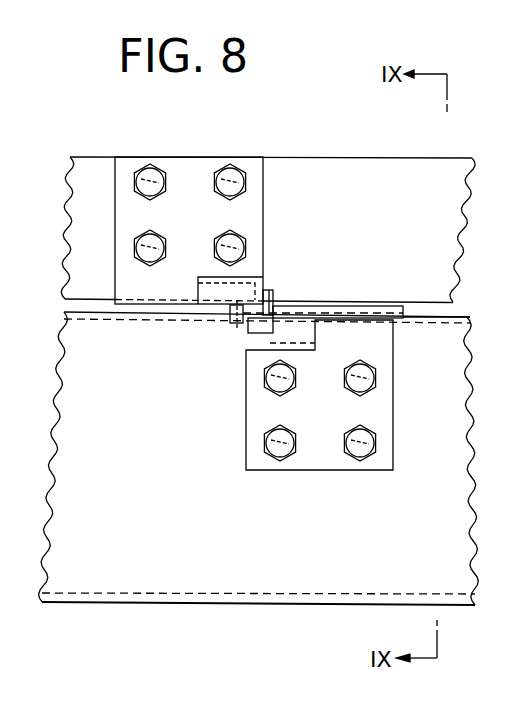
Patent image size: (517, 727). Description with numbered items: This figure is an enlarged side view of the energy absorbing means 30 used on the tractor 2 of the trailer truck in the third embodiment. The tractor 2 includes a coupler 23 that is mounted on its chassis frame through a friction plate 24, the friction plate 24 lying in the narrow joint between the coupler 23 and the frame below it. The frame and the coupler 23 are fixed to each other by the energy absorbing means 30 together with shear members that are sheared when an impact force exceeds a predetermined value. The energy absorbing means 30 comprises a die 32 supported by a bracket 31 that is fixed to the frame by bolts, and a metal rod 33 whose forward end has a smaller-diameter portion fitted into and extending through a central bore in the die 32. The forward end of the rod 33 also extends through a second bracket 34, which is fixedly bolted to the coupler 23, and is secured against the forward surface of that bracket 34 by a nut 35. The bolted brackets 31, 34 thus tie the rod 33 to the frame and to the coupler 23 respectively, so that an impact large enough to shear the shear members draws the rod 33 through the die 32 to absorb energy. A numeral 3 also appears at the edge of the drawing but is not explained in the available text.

The tractor 2 is at (470, 525).
The beam flange 3 is at (493, 374).
The coupler 23 is at (313, 156).
The friction plate 24 is at (452, 309).
The energy absorbing means 30 is at (230, 447).
The bracket 31 is at (247, 352).
The die 32 is at (270, 292).
The metal rod 33 is at (313, 306).
The bracket 34 is at (248, 292).
The nut 35 is at (237, 325).